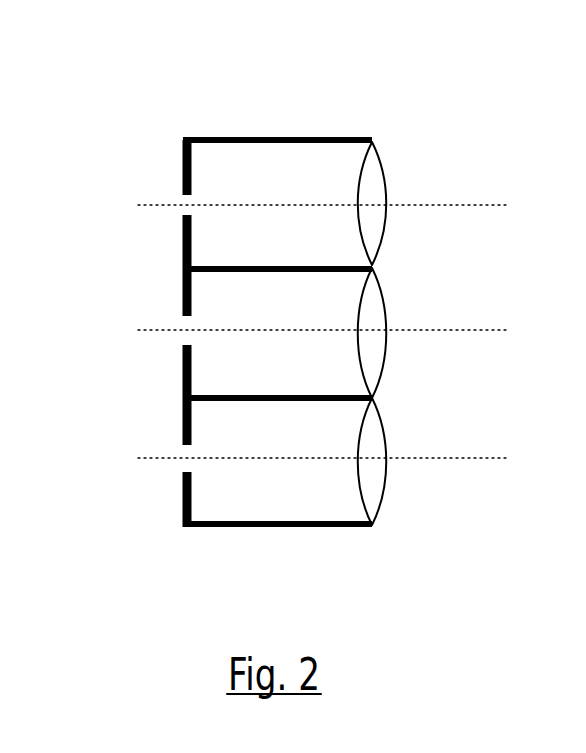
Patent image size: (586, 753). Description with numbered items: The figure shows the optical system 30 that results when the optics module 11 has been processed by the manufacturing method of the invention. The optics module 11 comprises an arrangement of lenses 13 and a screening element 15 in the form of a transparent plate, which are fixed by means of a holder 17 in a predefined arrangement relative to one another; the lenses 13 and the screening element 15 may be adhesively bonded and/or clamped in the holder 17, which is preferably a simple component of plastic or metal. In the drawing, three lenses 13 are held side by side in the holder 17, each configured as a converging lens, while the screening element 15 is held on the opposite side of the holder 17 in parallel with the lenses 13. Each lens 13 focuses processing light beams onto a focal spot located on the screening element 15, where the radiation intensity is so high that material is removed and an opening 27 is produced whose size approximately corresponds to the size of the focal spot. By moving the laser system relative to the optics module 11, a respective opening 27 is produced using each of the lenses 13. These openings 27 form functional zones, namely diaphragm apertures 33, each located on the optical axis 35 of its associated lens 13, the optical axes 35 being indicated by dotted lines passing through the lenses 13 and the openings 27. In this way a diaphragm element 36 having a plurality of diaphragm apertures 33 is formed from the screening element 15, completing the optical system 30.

The optics module 11 is at (289, 277).
The lens 13 is at (378, 170).
The screening element 15 is at (182, 165).
The holder 17 is at (278, 138).
The opening 27 is at (178, 200).
The optical system 30 is at (398, 274).
The diaphragm aperture 33 is at (178, 213).
The optical axis 35 is at (446, 206).
The diaphragm element 36 is at (182, 367).